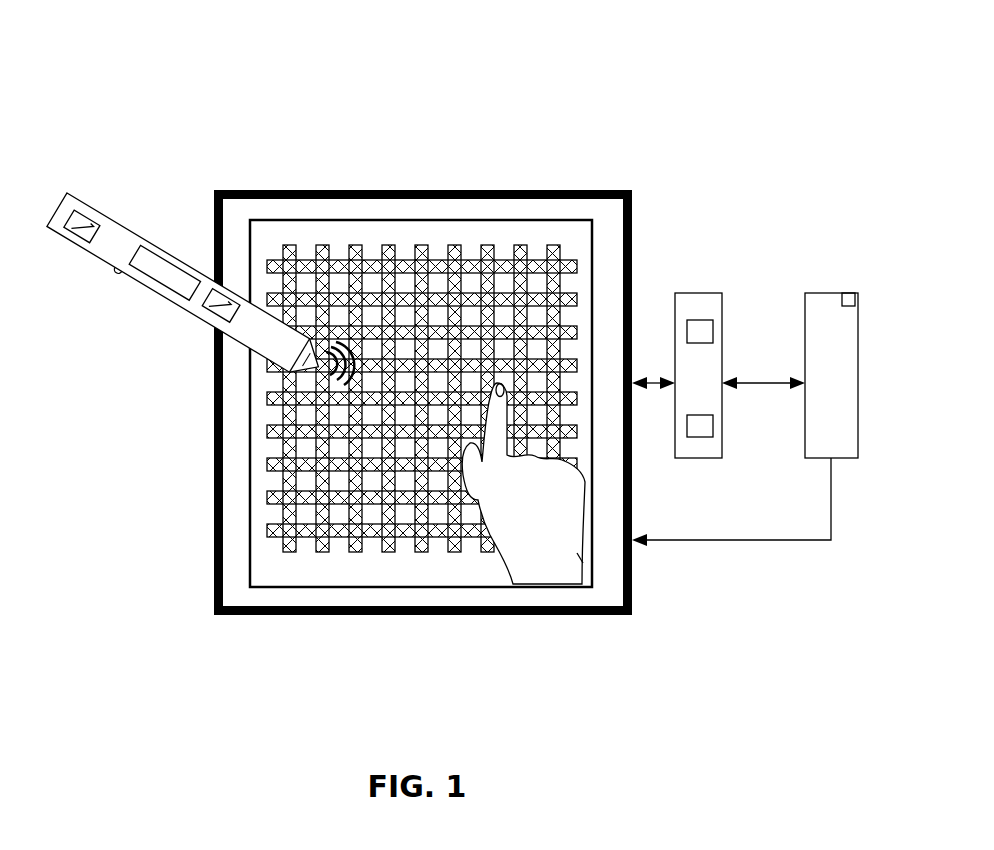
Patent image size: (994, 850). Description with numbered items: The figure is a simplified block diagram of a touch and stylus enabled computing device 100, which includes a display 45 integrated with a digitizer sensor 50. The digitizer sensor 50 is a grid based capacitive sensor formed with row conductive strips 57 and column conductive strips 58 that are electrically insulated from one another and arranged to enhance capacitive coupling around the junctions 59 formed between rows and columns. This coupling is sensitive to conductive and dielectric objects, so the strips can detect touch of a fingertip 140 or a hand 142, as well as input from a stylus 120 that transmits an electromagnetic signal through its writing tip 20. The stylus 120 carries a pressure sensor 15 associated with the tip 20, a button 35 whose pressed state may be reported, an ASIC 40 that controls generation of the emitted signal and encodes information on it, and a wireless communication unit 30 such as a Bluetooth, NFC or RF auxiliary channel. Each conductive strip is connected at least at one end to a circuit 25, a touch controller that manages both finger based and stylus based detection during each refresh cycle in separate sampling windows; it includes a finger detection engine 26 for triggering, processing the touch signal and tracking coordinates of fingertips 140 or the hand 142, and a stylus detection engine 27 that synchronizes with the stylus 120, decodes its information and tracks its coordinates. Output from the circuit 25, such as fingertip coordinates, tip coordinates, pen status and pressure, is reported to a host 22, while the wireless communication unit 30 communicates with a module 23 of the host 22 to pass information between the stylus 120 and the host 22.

The computing device 100 is at (418, 101).
The display 45 is at (547, 190).
The digitizer sensor 50 is at (592, 268).
The column conductive strips 58 is at (480, 247).
The row conductive strips 57 is at (267, 437).
The junctions 59 is at (388, 497).
The hand 142 is at (528, 528).
The fingertip 140 is at (493, 400).
The stylus 120 is at (184, 262).
The wireless communication unit 30 is at (73, 237).
The ASIC 40 is at (147, 285).
The pressure sensor 15 is at (210, 317).
The button 35 is at (108, 277).
The writing tip 20 is at (298, 380).
The circuit 25 is at (697, 293).
The finger detection engine 26 is at (713, 328).
The stylus detection engine 27 is at (713, 428).
The host 22 is at (832, 293).
The module 23 is at (853, 308).